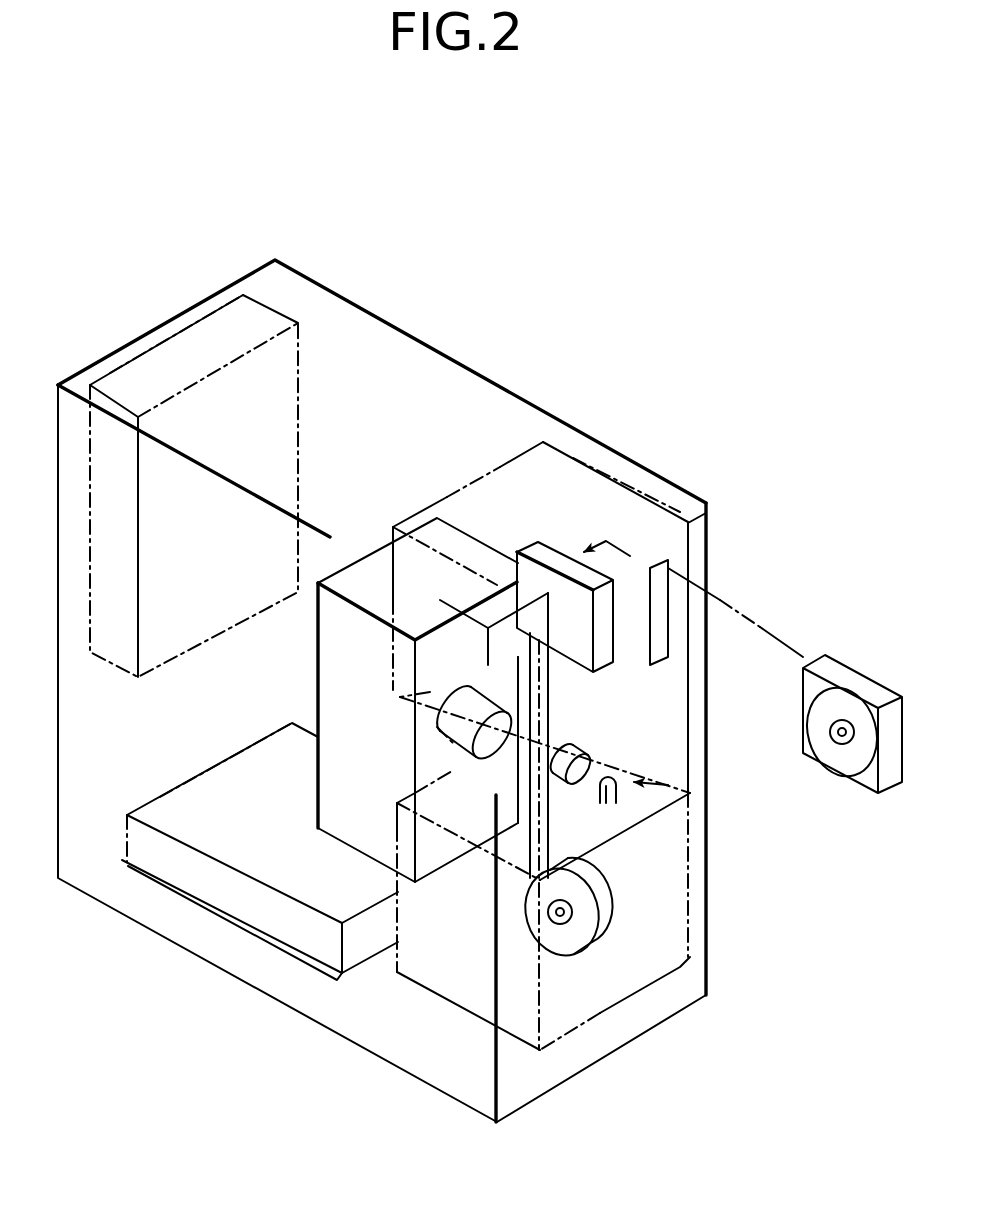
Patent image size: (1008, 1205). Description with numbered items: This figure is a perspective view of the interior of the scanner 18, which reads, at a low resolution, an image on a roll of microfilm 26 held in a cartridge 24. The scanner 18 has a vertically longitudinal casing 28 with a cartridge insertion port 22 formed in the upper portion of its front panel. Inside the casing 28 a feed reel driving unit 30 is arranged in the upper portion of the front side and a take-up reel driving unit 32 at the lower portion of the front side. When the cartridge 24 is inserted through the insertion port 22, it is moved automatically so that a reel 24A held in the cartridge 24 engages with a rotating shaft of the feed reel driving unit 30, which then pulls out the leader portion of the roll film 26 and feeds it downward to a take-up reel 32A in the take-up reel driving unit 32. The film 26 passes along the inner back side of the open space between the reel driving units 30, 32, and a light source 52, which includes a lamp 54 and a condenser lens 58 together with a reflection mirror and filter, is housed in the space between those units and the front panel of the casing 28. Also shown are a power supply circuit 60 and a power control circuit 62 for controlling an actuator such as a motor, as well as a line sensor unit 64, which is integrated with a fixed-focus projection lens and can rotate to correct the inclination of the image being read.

The scanner 18 is at (447, 350).
The cartridge insertion port 22 is at (663, 570).
The cartridge 24 is at (877, 678).
The reel 24A is at (850, 760).
The roll film 26 is at (532, 847).
The casing 28 is at (300, 272).
The feed reel driving unit 30 is at (587, 468).
The take-up reel driving unit 32 is at (680, 970).
The take-up reel 32A is at (580, 937).
The light source 52 is at (648, 772).
The lamp 54 is at (620, 790).
The condenser lens 58 is at (597, 747).
The power supply circuit 60 is at (300, 370).
The power control circuit 62 is at (124, 845).
The line sensor unit 64 is at (455, 528).